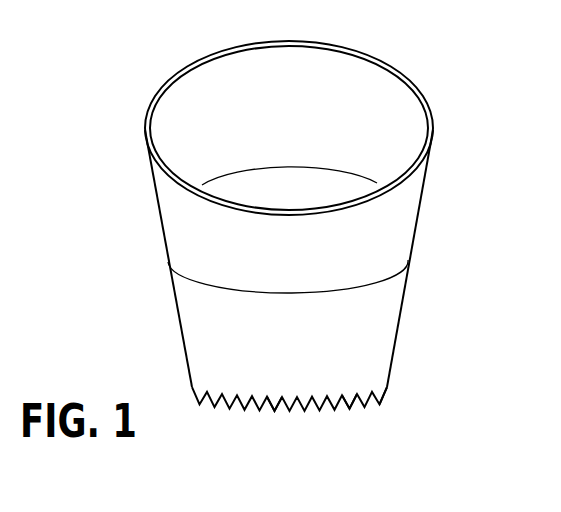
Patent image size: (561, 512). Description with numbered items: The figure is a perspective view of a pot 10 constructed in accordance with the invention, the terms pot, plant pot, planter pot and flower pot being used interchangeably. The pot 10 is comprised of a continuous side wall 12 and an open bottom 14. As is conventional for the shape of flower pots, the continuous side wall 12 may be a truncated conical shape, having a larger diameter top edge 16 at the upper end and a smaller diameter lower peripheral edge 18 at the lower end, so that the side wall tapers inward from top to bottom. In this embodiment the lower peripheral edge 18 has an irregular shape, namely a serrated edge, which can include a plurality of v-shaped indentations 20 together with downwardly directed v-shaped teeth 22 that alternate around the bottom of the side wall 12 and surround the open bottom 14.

The pot 10 is at (468, 184).
The continuous side wall 12 is at (192, 282).
The open bottom 14 is at (211, 418).
The top edge 16 is at (403, 80).
The lower peripheral edge 18 is at (387, 385).
The v-shaped indentations 20 is at (273, 400).
The downwardly directed v-shaped teeth 22 is at (351, 401).